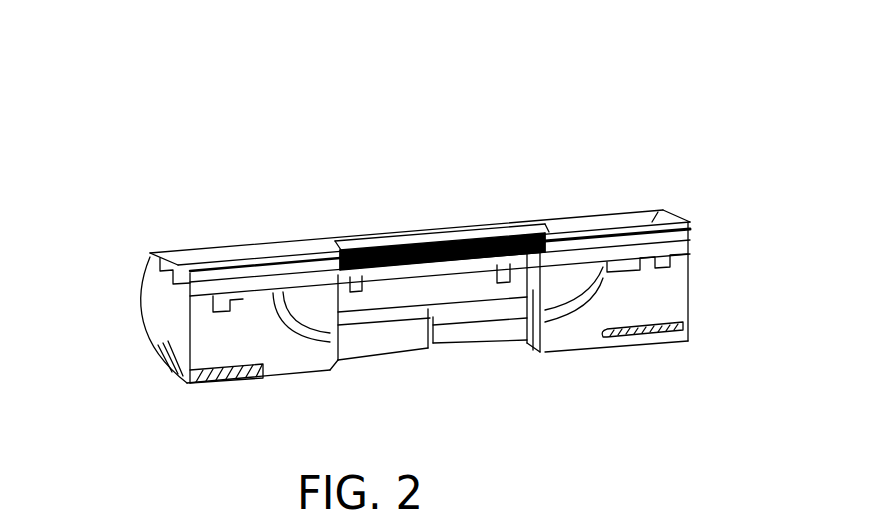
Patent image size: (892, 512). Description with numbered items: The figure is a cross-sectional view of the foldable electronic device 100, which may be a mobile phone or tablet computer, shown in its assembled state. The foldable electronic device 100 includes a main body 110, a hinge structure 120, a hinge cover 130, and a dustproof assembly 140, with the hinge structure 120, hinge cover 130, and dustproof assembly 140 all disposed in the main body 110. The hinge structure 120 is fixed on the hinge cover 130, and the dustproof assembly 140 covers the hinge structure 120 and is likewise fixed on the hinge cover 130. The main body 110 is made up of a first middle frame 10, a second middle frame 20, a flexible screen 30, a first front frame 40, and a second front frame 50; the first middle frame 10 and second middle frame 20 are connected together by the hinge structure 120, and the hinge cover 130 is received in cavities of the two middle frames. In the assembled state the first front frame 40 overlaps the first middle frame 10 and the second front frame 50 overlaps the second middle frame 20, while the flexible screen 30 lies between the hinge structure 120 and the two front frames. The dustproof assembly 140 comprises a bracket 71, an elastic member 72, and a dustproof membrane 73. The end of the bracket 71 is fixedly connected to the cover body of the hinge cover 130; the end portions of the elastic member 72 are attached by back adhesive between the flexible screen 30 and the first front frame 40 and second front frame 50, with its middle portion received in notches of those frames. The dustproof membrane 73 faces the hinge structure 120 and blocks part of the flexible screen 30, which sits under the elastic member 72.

The foldable electronic device 100 is at (447, 85).
The main body 110 is at (128, 134).
The first middle frame 10 is at (680, 293).
The second middle frame 20 is at (215, 327).
The flexible screen 30 is at (225, 280).
The first front frame 40 is at (582, 228).
The second front frame 50 is at (237, 253).
The hinge structure 120 is at (247, 287).
The hinge cover 130 is at (423, 297).
The dustproof assembly 140 is at (470, 172).
The bracket 71 is at (437, 240).
The elastic member 72 is at (400, 250).
The dustproof membrane 73 is at (513, 247).